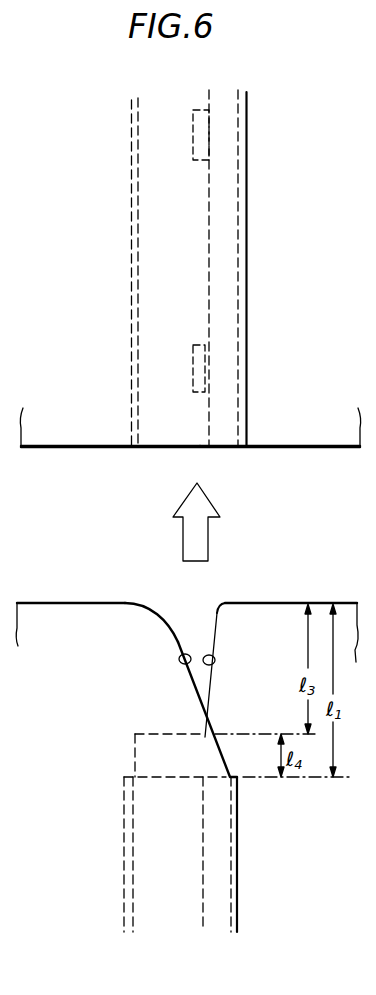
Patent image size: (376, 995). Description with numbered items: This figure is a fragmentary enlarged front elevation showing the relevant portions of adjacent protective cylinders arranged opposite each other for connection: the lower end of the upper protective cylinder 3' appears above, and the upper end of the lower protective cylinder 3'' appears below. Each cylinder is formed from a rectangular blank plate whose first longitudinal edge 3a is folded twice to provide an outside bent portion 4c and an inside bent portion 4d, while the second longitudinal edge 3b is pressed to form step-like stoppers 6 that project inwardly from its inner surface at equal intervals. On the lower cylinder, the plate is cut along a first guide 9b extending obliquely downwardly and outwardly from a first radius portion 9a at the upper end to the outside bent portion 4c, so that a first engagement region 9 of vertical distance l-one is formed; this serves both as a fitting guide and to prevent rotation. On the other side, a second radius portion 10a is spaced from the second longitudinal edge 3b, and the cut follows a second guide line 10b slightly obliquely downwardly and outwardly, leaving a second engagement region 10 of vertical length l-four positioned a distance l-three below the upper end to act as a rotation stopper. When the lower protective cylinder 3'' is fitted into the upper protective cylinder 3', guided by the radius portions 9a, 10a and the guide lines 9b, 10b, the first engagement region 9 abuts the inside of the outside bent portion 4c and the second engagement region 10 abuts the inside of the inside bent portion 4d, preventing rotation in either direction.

The upper protective cylinder 3' is at (190, 454).
The lower protective cylinder 3'' is at (85, 563).
The first longitudinal edge 3a is at (165, 437).
The second longitudinal edge 3b is at (285, 435).
The outside bent portion 4c is at (246, 225).
The inside bent portion 4d is at (130, 257).
The step-like stoppers 6 is at (193, 372).
The first engagement region 9 is at (222, 755).
The first radius portion 9a is at (154, 604).
The first guide 9b is at (180, 667).
The second engagement region 10 is at (135, 756).
The second radius portion 10a is at (222, 604).
The second guide line 10b is at (213, 664).